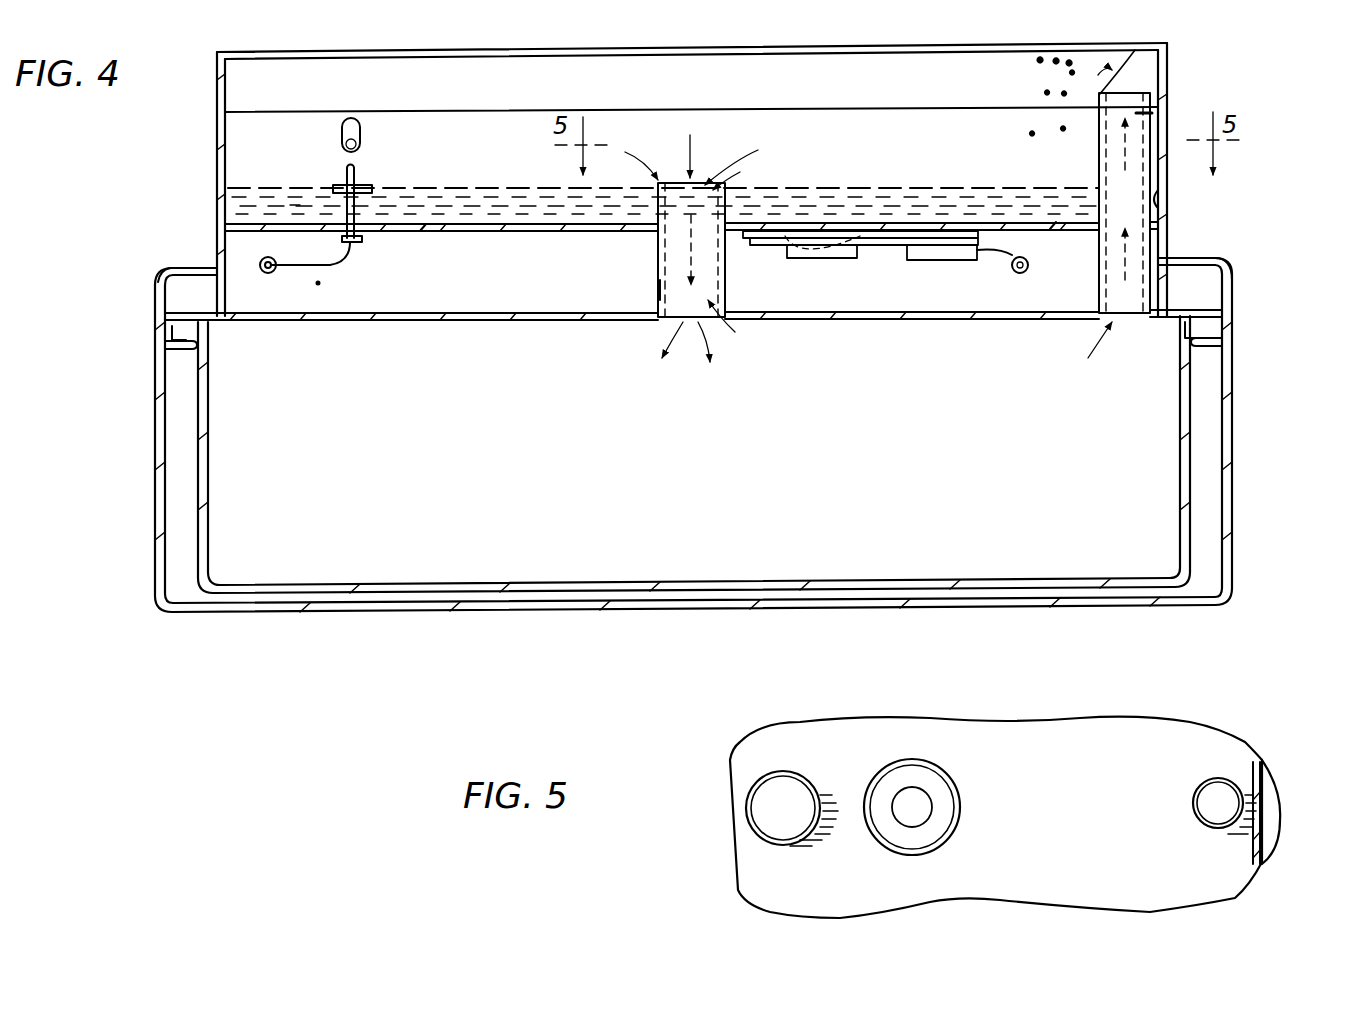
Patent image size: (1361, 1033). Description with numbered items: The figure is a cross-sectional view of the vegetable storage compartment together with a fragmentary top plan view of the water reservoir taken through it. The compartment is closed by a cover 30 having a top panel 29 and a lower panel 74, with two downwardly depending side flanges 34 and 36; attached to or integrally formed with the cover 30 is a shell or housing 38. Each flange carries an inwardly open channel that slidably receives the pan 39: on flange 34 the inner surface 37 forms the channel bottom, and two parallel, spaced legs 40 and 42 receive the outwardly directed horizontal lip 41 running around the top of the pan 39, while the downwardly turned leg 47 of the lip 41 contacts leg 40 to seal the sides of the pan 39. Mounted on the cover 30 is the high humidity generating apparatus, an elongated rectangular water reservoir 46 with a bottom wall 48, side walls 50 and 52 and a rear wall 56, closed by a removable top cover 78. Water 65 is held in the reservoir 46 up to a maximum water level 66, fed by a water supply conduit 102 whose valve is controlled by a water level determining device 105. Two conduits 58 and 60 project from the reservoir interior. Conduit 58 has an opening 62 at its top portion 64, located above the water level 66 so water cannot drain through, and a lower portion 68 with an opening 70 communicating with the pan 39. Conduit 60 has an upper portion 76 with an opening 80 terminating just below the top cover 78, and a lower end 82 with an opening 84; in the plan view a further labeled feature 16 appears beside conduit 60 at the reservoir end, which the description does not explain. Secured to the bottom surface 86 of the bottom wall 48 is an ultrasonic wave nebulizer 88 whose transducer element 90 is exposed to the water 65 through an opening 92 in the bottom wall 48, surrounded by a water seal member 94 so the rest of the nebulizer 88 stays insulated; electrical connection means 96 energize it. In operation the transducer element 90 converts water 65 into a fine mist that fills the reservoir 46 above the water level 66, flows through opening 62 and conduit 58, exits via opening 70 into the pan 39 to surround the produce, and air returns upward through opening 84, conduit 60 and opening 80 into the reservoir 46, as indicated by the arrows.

In FIG. 5, the opening 16 is at (1220, 790).
In FIG. 4, the top panel 29 is at (465, 238).
In FIG. 4, the cover 30 is at (1195, 255).
In FIG. 4, the side flange 34 is at (1228, 278).
In FIG. 4, the side flange 36 is at (160, 280).
In FIG. 4, the inner surface 37 is at (1210, 328).
In FIG. 4, the shell or housing 38 is at (1240, 435).
In FIG. 4, the pan 39 is at (1178, 493).
In FIG. 4, the leg 40 is at (185, 352).
In FIG. 4, the lip 41 is at (175, 332).
In FIG. 4, the leg 42 is at (190, 310).
In FIG. 4, the water reservoir 46 is at (992, 150).
In FIG. 4, the downwardly turned leg 47 is at (175, 345).
In FIG. 4, the bottom wall 48 is at (560, 236).
In FIG. 5, the bottom wall 48 is at (1085, 778).
In FIG. 4, the side wall 50 is at (1165, 192).
In FIG. 5, the side wall 50 is at (1240, 770).
In FIG. 4, the side wall 52 is at (230, 128).
In FIG. 4, the rear wall 56 is at (912, 130).
In FIG. 4, the conduit 58 is at (655, 270).
In FIG. 5, the conduit 58 is at (772, 845).
In FIG. 4, the conduit 60 is at (1098, 158).
In FIG. 5, the conduit 60 is at (1192, 790).
In FIG. 4, the opening 62 is at (665, 182).
In FIG. 5, the opening 62 is at (780, 784).
In FIG. 4, the top portion 64 is at (728, 168).
In FIG. 4, the water 65 is at (293, 197).
In FIG. 4, the maximum water level 66 is at (498, 190).
In FIG. 4, the lower portion 68 is at (725, 325).
In FIG. 4, the opening 70 is at (672, 322).
In FIG. 4, the lower panel 74 is at (330, 312).
In FIG. 4, the upper portion 76 is at (1155, 113).
In FIG. 4, the removable top cover 78 is at (428, 90).
In FIG. 4, the opening 80 is at (1130, 95).
In FIG. 4, the lower end 82 is at (1120, 285).
In FIG. 4, the opening 84 is at (1100, 320).
In FIG. 4, the bottom surface 86 is at (1042, 232).
In FIG. 4, the ultrasonic wave nebulizer 88 is at (930, 258).
In FIG. 4, the transducer element 90 is at (800, 260).
In FIG. 5, the transducer element 90 is at (920, 800).
In FIG. 4, the opening 92 is at (790, 230).
In FIG. 5, the opening 92 is at (945, 820).
In FIG. 4, the water seal member 94 is at (872, 240).
In FIG. 4, the electrical connection means 96 is at (1005, 262).
In FIG. 4, the water supply conduit 102 is at (362, 136).
In FIG. 4, the water level determining device 105 is at (360, 170).